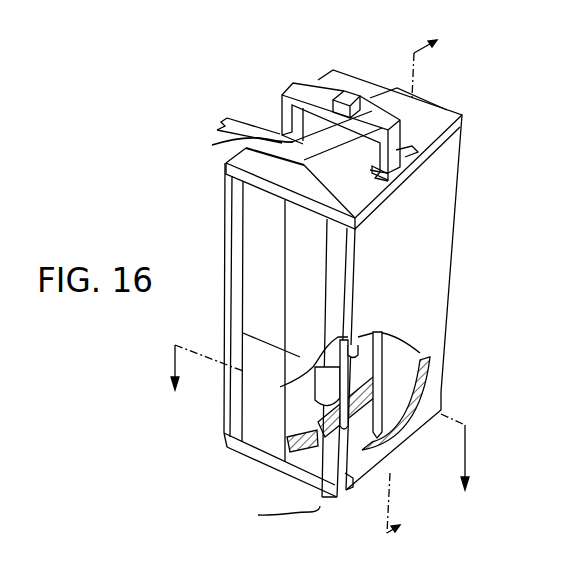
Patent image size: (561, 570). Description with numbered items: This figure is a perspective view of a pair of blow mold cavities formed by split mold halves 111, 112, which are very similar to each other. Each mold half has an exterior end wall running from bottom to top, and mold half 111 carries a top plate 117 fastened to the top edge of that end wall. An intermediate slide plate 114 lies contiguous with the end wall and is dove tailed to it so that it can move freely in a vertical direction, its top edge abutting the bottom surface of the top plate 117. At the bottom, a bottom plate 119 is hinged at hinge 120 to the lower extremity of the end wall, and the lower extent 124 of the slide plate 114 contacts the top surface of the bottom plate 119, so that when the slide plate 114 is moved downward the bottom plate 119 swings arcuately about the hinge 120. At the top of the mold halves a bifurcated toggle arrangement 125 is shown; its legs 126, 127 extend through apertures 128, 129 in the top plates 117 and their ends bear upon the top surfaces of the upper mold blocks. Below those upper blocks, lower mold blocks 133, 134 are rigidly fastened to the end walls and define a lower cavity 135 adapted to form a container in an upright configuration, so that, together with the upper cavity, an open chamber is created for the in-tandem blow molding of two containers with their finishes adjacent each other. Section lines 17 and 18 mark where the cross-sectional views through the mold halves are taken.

The split mold half 111 is at (435, 221).
The split mold half 112 is at (225, 215).
The intermediate slide plate 114 is at (380, 340).
The top plate 117 is at (437, 113).
The bottom plate 119 is at (260, 458).
The hinge 120 is at (228, 440).
The lower extent of slide plate 124 is at (393, 390).
The bifurcated toggle arrangement 125 is at (303, 97).
The leg of toggle 126 is at (385, 165).
The leg of toggle 127 is at (218, 145).
The aperture 128 is at (410, 152).
The aperture 129 is at (280, 128).
The lower mold block 133 is at (300, 425).
The lower mold block 134 is at (290, 420).
The lower cavity 135 is at (350, 360).
The section line 17- 17 is at (316, 430).
The section line 18- 18 is at (425, 275).